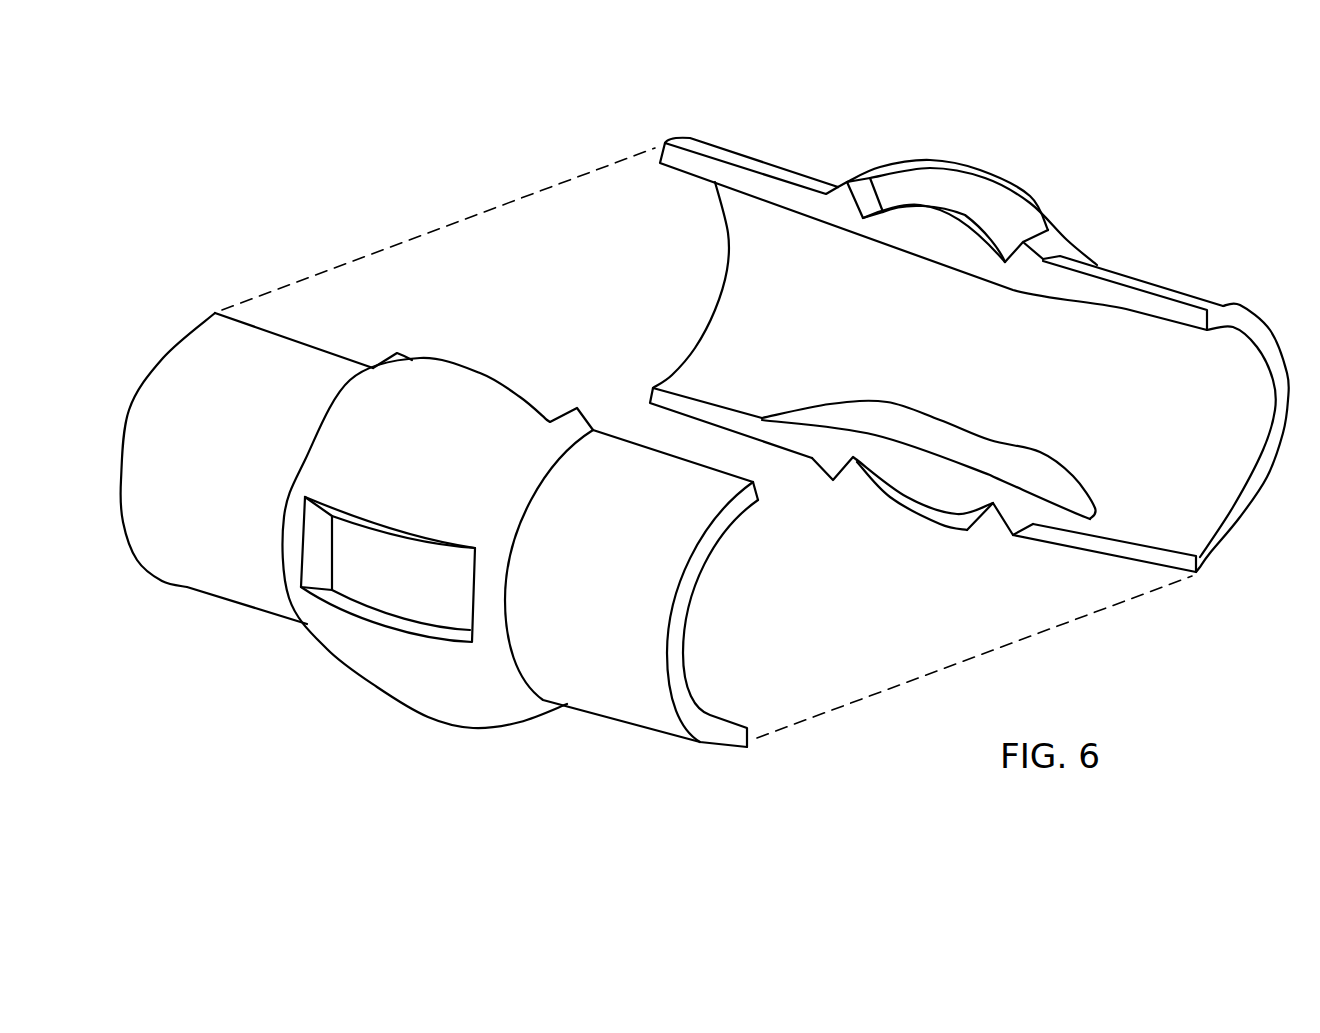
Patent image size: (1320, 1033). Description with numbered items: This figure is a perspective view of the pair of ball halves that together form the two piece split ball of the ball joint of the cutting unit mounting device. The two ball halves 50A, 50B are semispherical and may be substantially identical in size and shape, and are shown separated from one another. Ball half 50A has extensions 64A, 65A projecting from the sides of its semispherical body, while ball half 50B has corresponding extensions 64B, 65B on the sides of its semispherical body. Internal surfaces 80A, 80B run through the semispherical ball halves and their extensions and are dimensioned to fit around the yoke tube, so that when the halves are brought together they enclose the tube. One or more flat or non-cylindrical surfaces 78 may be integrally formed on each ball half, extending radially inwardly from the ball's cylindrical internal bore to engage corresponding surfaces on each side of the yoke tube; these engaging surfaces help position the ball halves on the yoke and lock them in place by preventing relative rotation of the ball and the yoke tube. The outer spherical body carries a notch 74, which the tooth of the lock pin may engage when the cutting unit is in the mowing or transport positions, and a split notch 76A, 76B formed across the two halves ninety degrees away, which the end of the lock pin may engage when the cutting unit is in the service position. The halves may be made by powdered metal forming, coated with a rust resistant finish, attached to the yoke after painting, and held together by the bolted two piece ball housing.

The ball half 50A is at (447, 402).
The ball half 50B is at (1070, 243).
The extension 64A is at (187, 567).
The extension 64B is at (773, 168).
The extension 65A is at (630, 693).
The extension 65B is at (1167, 290).
The notch 74 is at (335, 605).
The split notch 76A is at (518, 388).
The split notch 76B is at (977, 202).
The flat or non-cylindrical surface 78 is at (943, 440).
The internal surface 80A is at (685, 653).
The internal surface 80B is at (742, 263).